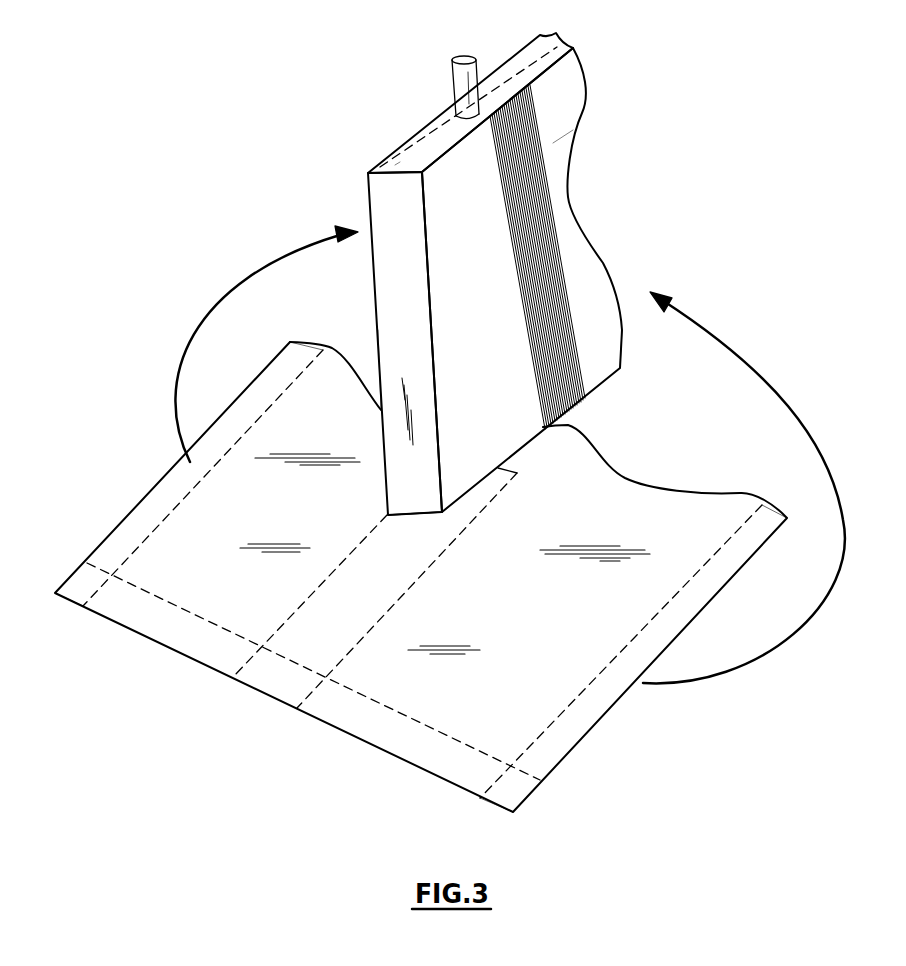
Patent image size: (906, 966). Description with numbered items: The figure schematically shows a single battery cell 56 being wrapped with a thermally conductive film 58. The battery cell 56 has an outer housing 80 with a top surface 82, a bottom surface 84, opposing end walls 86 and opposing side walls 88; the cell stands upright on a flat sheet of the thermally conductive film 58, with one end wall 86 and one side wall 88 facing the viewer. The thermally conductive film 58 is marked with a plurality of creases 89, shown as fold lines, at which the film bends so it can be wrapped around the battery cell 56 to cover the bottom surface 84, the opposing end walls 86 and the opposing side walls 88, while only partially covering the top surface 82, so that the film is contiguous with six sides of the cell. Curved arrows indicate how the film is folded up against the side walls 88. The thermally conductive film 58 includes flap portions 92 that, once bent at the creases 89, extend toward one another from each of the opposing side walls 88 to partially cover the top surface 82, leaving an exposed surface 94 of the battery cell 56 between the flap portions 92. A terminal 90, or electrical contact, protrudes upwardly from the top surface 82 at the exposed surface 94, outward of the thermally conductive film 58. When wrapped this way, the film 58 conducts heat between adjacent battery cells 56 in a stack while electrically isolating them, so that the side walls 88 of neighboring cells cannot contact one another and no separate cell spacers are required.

The battery cell 56 is at (501, 297).
The thermally conductive film 58 is at (541, 615).
The outer housing 80 is at (560, 138).
The top surface 82 is at (521, 56).
The bottom surface 84 is at (432, 515).
The end wall 86 is at (416, 332).
The side wall 88 is at (376, 303).
The crease 89 is at (200, 481).
The terminal 90 is at (460, 57).
The flap portion 92 is at (148, 510).
The exposed surface 94 is at (420, 152).